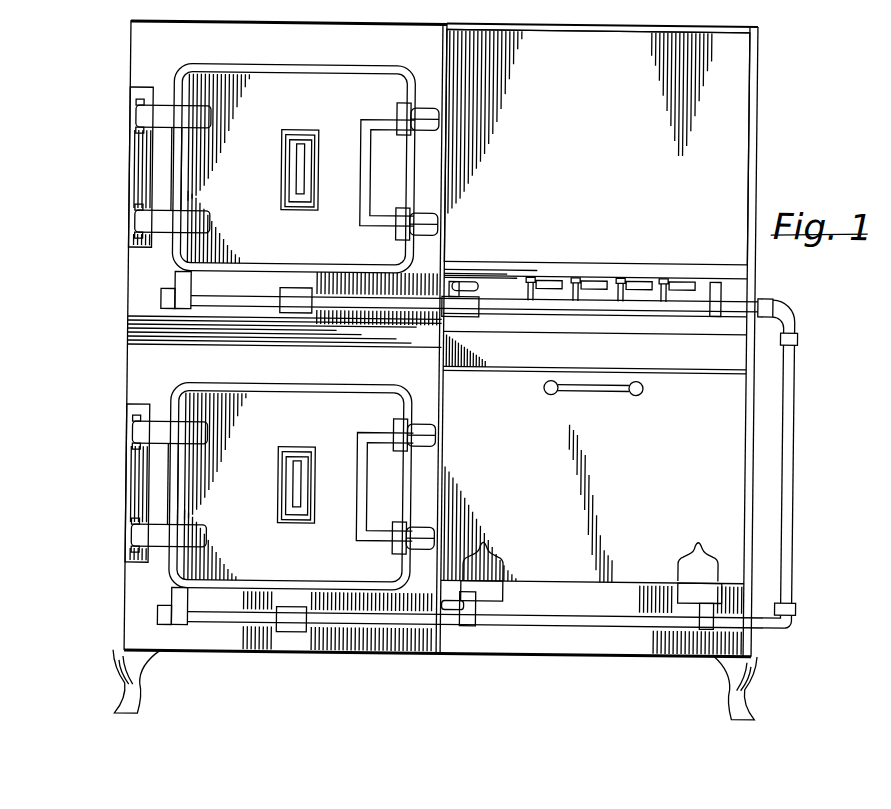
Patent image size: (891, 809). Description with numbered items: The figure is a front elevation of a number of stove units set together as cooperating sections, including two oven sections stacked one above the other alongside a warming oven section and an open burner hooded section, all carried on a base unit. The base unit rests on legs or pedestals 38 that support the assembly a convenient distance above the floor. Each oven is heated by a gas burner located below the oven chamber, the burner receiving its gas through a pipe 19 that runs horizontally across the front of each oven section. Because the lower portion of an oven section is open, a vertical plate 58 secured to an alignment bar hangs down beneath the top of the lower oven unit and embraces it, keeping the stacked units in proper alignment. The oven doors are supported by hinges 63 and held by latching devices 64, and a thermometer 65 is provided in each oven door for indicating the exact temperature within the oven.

The pipe 19 is at (178, 282).
The legs or pedestals 38 is at (134, 668).
The vertical plate 58 is at (133, 333).
The hinges 63 is at (137, 113).
The latching devices 64 is at (432, 118).
The thermometer 65 is at (301, 152).